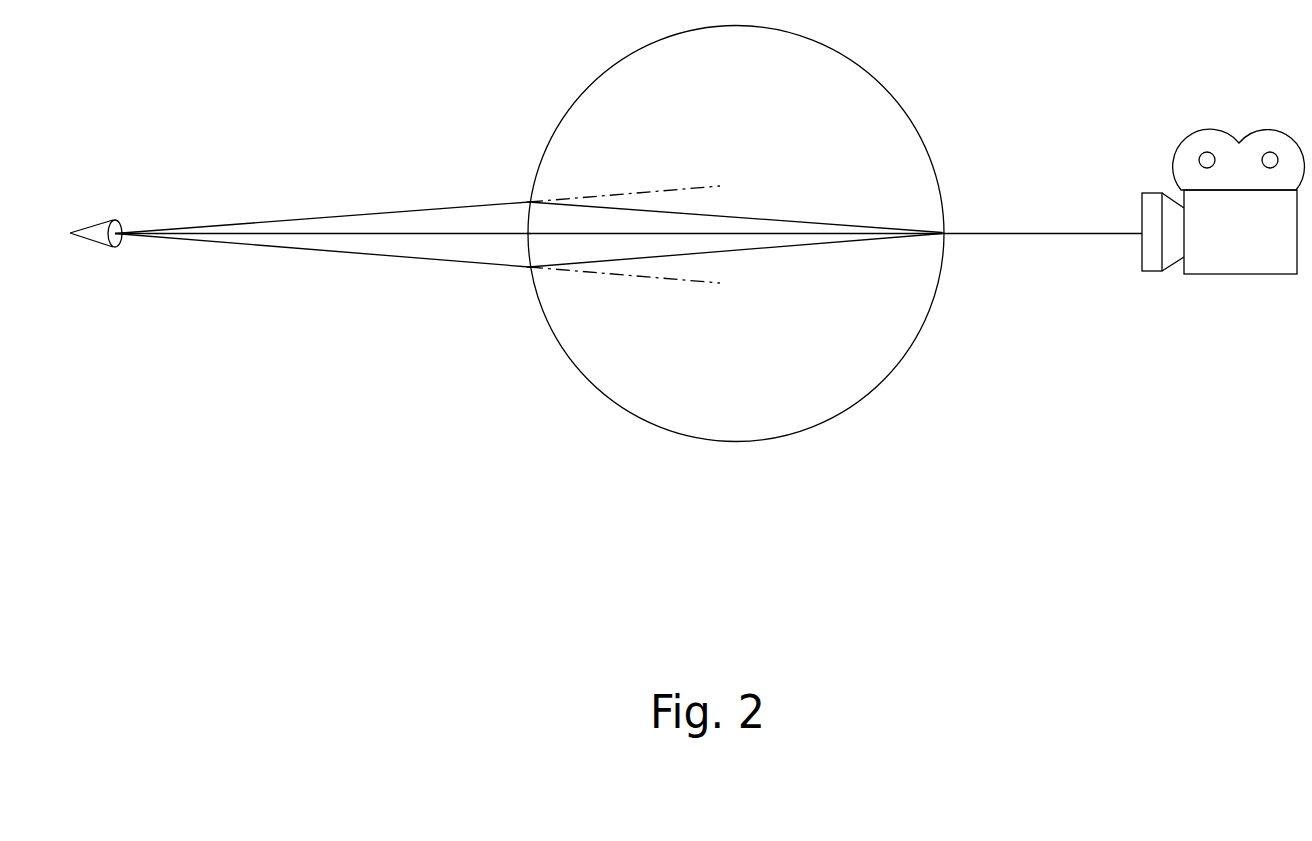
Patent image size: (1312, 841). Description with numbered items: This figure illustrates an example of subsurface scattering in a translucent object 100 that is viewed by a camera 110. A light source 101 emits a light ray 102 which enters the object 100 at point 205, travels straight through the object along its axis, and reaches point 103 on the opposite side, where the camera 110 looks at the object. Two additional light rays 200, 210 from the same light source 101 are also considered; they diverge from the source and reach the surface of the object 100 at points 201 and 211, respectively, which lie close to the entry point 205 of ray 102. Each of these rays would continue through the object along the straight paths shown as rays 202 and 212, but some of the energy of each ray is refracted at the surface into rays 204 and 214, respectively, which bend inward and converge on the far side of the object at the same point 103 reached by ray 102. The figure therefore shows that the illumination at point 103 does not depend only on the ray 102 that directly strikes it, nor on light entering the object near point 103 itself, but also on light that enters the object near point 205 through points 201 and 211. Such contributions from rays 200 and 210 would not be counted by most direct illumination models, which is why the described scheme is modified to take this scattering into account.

The translucent object 100 is at (735, 442).
The light source 101 is at (92, 246).
The light ray 102 is at (355, 232).
The surface point 103 is at (942, 233).
The camera 110 is at (1222, 274).
The light ray 200 is at (355, 256).
The surface point 201 is at (530, 269).
The light ray 202 is at (693, 284).
The refracted light ray 204 is at (773, 252).
The entry point 205 is at (528, 232).
The light ray 210 is at (427, 208).
The surface point 211 is at (533, 201).
The light ray 212 is at (702, 187).
The refracted light ray 214 is at (773, 218).